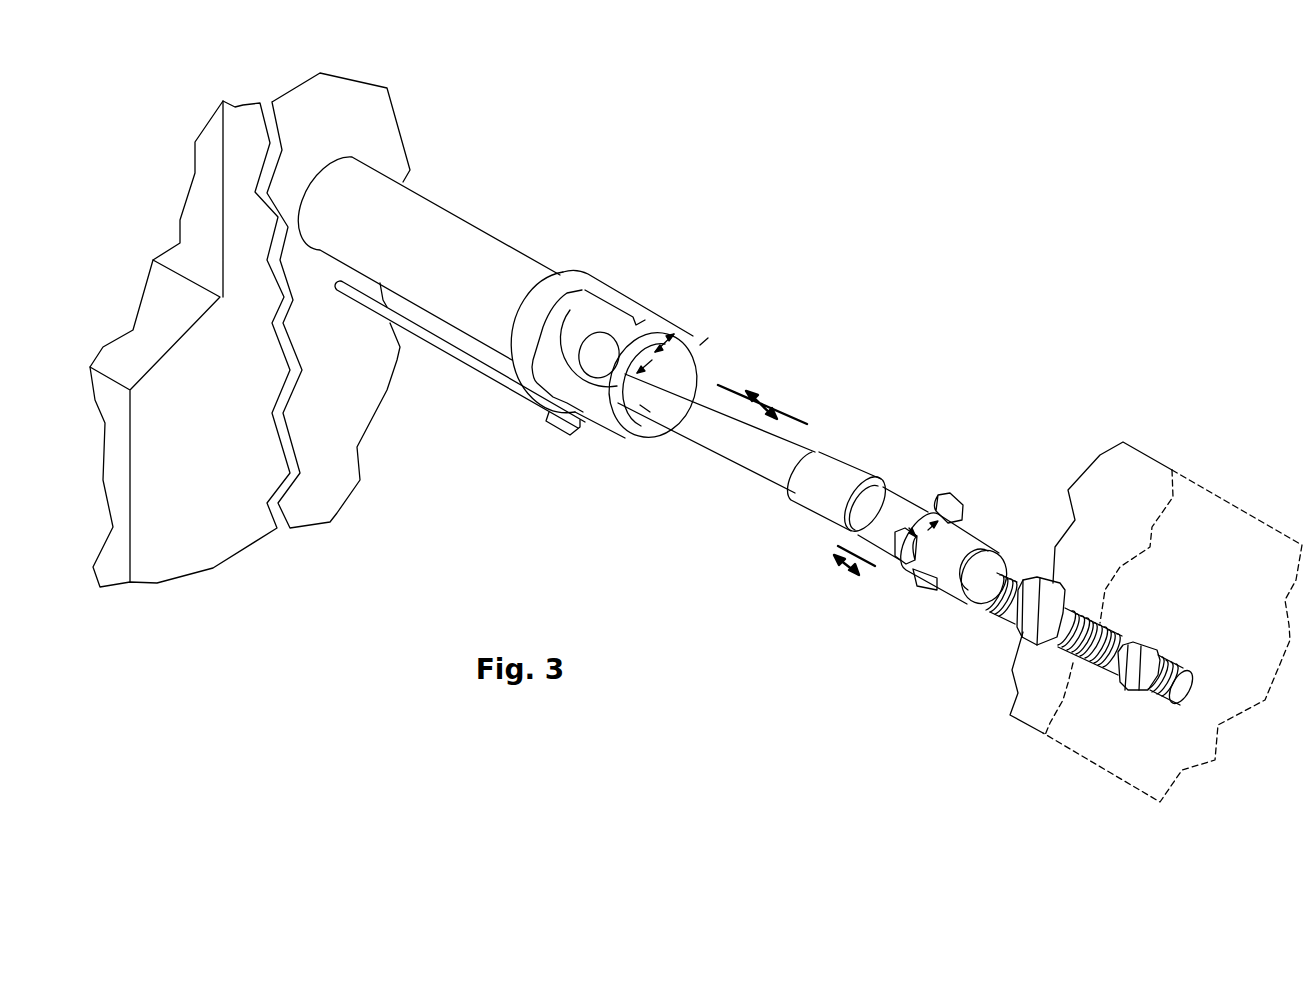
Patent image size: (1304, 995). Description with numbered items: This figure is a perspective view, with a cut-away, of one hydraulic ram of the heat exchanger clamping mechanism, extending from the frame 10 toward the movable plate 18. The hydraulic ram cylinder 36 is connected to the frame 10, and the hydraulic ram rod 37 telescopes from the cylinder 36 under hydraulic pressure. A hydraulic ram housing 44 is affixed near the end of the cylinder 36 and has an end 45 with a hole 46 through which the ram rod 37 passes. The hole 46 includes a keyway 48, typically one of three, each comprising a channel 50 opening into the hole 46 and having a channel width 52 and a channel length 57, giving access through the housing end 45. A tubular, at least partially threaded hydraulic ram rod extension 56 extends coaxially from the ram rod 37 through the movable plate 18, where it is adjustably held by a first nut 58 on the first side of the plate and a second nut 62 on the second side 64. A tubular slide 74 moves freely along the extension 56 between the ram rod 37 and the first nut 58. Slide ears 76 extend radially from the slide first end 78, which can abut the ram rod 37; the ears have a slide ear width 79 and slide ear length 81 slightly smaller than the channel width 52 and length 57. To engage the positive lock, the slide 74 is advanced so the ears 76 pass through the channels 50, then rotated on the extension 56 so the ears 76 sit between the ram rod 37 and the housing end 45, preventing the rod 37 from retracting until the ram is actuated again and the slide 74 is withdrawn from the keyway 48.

The frame 10 is at (381, 105).
The movable plate 18 is at (1237, 528).
The hydraulic ram cylinder 36 is at (582, 310).
The hydraulic ram rod 37 is at (607, 350).
The hydraulic ram housing 44 is at (598, 283).
The end 45 is at (690, 368).
The hole 46 is at (645, 418).
The keyway 48 is at (708, 340).
The channel 50 is at (692, 337).
The channel width 52 is at (625, 412).
The hydraulic ram rod extension 56 is at (1000, 610).
The channel length 57 is at (670, 333).
The first nut 58 is at (1010, 640).
The second nut 62 is at (1118, 682).
The second side 64 is at (1105, 750).
The tubular slide 74 is at (973, 547).
The slide ears 76 is at (963, 513).
The slide first end 78 is at (913, 513).
The slide ear width 79 is at (922, 500).
The slide ear length 81 is at (955, 492).